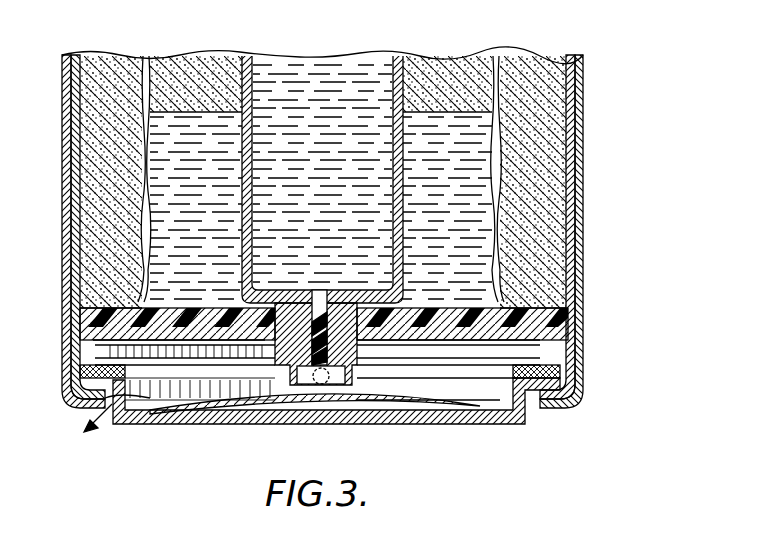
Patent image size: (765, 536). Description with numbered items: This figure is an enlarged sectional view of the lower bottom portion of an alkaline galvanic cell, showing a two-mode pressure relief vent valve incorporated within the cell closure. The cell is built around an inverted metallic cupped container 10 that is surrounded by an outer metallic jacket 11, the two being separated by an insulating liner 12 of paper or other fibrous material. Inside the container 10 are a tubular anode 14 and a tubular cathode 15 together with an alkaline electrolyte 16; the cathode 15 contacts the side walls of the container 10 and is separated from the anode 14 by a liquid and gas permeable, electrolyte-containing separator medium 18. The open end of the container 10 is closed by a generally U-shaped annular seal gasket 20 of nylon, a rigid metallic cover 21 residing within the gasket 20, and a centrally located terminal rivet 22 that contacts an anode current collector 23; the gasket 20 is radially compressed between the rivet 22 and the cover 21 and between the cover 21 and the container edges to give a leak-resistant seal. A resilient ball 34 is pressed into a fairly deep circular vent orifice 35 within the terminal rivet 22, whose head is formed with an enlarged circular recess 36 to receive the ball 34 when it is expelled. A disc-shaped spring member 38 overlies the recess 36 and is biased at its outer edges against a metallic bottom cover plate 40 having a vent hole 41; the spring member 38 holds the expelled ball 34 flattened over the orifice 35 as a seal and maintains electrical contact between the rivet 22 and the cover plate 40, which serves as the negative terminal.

The cupped container 10 is at (342, 231).
The outer metallic jacket 11 is at (578, 124).
The insulating liner 12 is at (577, 196).
The tubular anode 14 is at (470, 64).
The tubular cathode 15 is at (538, 62).
The alkaline electrolyte 16 is at (345, 65).
The separator medium 18 is at (493, 60).
The annular seal gasket 20 is at (207, 314).
The metallic cover 21 is at (451, 318).
The terminal rivet 22 is at (348, 378).
The anode current collector 23 is at (397, 60).
The resilient ball 34 is at (310, 362).
The vent orifice 35 is at (318, 292).
The circular recess 36 is at (330, 386).
The spring member 38 is at (402, 398).
The bottom cover plate 40 is at (470, 420).
The vent hole 41 is at (118, 400).